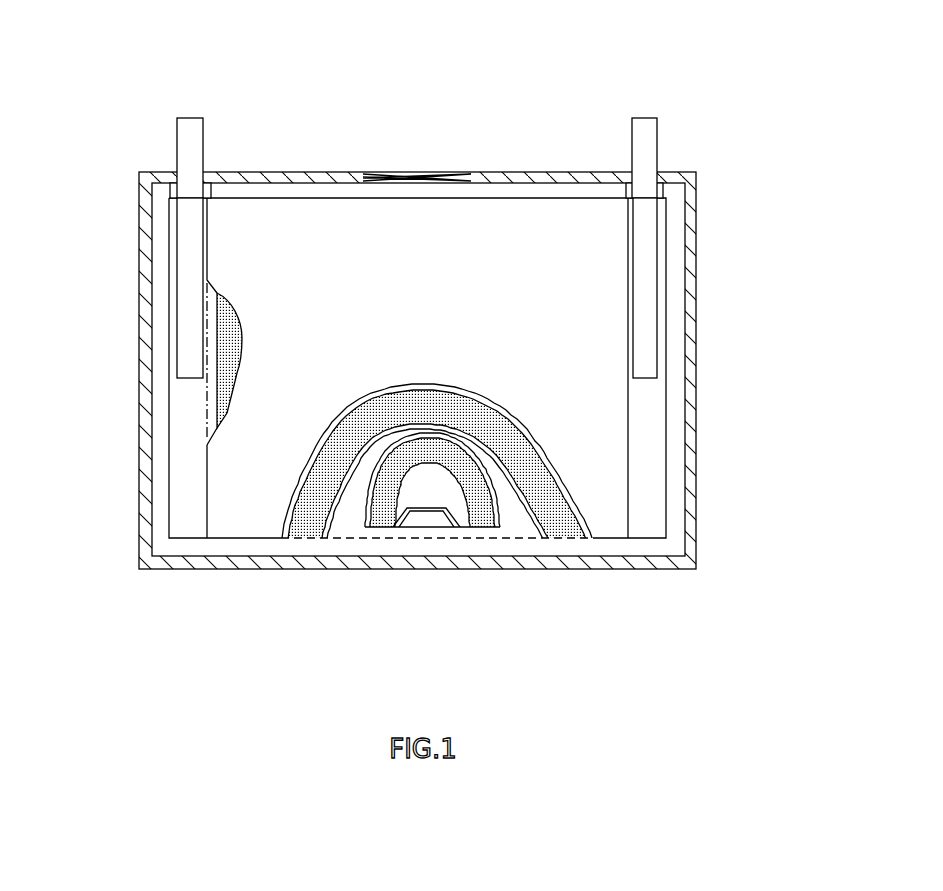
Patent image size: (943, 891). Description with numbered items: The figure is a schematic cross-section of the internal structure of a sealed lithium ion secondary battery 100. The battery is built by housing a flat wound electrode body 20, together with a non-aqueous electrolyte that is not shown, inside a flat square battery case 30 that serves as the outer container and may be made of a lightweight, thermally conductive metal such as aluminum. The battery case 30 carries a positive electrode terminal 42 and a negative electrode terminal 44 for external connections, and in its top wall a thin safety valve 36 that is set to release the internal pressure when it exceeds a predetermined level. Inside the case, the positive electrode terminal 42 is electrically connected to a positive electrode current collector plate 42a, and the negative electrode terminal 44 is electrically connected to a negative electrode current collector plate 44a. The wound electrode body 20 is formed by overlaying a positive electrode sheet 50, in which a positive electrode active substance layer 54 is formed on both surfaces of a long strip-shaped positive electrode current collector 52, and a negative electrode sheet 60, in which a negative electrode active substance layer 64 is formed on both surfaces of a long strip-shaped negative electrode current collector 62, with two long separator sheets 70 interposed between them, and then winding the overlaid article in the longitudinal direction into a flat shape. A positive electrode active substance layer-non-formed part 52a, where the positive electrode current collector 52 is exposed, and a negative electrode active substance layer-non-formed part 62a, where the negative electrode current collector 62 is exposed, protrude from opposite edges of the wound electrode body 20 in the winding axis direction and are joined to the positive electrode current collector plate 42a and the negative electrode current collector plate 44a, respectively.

The lithium ion secondary battery 100 is at (464, 309).
The wound electrode body 20 is at (417, 397).
The battery case 30 is at (697, 280).
The safety valve 36 is at (418, 172).
The positive electrode terminal 42 is at (126, 213).
The positive electrode current collector plate 42a is at (190, 267).
The negative electrode terminal 44 is at (712, 212).
The negative electrode current collector plate 44a is at (648, 230).
The positive electrode sheet 50 is at (305, 522).
The positive electrode current collector 52 is at (135, 372).
The positive electrode active substance layer-non-formed part 52a is at (185, 510).
The positive electrode active substance layer 54 is at (230, 332).
The negative electrode sheet 60 is at (382, 518).
The negative electrode current collector 62 is at (704, 368).
The negative electrode active substance layer-non-formed part 62a is at (652, 437).
The negative electrode active substance layer 64 is at (427, 562).
The separator sheet 70 is at (245, 468).